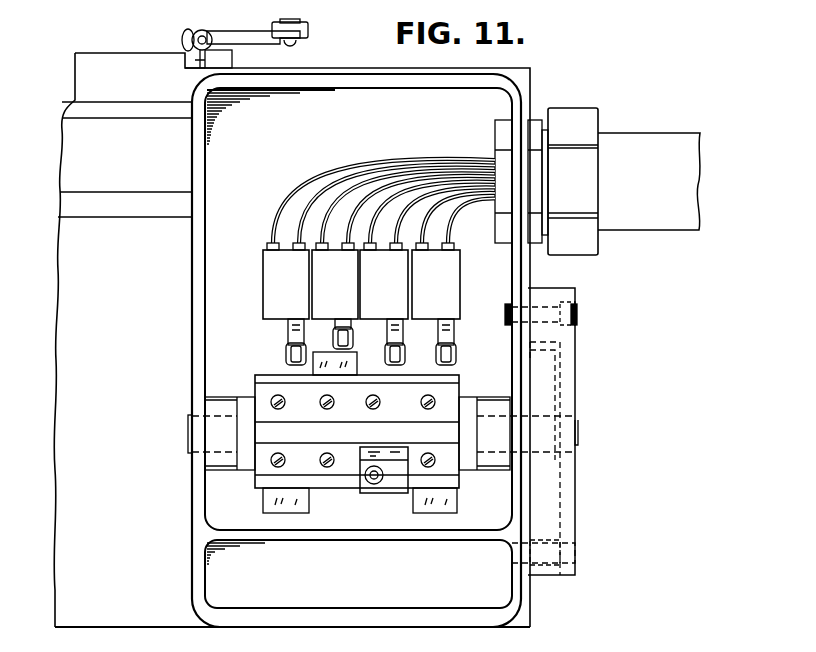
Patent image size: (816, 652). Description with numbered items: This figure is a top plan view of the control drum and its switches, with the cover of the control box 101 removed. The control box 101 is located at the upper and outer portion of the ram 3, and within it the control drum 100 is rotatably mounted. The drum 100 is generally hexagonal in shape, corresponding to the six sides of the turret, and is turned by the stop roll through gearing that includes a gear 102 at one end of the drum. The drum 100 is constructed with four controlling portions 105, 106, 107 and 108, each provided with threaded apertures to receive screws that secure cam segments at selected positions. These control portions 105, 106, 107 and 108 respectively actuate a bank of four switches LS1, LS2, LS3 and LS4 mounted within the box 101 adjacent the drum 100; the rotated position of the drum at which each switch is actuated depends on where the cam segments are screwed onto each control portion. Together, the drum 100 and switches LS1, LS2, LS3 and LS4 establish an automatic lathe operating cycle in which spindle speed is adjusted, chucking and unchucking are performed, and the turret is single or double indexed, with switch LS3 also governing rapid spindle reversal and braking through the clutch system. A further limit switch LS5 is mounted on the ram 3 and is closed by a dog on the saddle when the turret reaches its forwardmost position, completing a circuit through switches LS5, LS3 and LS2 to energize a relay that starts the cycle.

The ram 3 is at (70, 495).
The control drum 100 is at (383, 431).
The control box 101 is at (192, 325).
The gear 102 is at (552, 375).
The controlling portion 105 is at (266, 476).
The controlling portion 106 is at (333, 470).
The controlling portion 107 is at (390, 403).
The controlling portion 108 is at (456, 402).
The limit switch LS1 is at (286, 304).
The limit switch LS2 is at (335, 296).
The limit switch LS3 is at (384, 304).
The limit switch LS4 is at (436, 304).
The limit switch LS5 is at (136, 50).